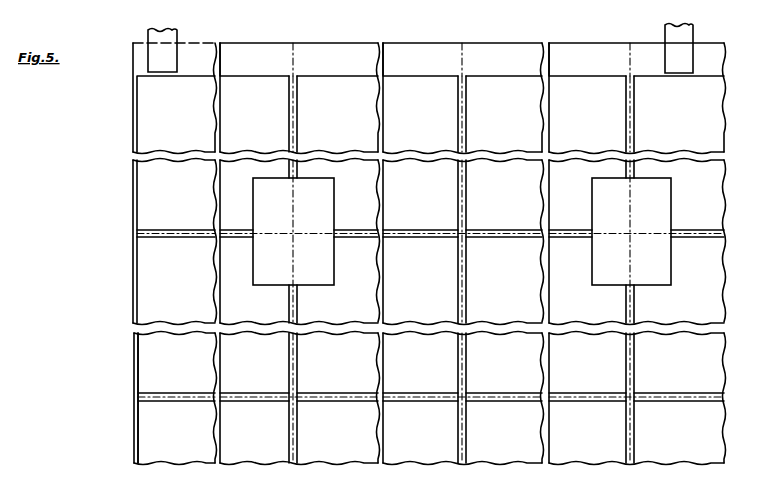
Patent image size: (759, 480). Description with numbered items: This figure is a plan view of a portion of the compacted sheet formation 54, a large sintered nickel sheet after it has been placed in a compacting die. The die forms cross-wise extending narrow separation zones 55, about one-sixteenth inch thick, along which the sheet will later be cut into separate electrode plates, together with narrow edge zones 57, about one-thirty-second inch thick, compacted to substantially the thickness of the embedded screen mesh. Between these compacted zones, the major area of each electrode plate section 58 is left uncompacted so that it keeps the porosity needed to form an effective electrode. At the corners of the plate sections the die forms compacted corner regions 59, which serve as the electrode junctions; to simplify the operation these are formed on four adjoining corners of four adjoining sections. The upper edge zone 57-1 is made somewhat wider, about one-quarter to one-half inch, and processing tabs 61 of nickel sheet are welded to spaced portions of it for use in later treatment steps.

The compacted sheet formation 54 is at (121, 358).
The separation zones 55 is at (293, 123).
The edge zones 57 is at (133, 203).
The upper edge zone 57-1 is at (248, 40).
The electrode plate section 58 is at (429, 254).
The compacted corner region 59 is at (462, 231).
The processing tabs 61 is at (148, 33).